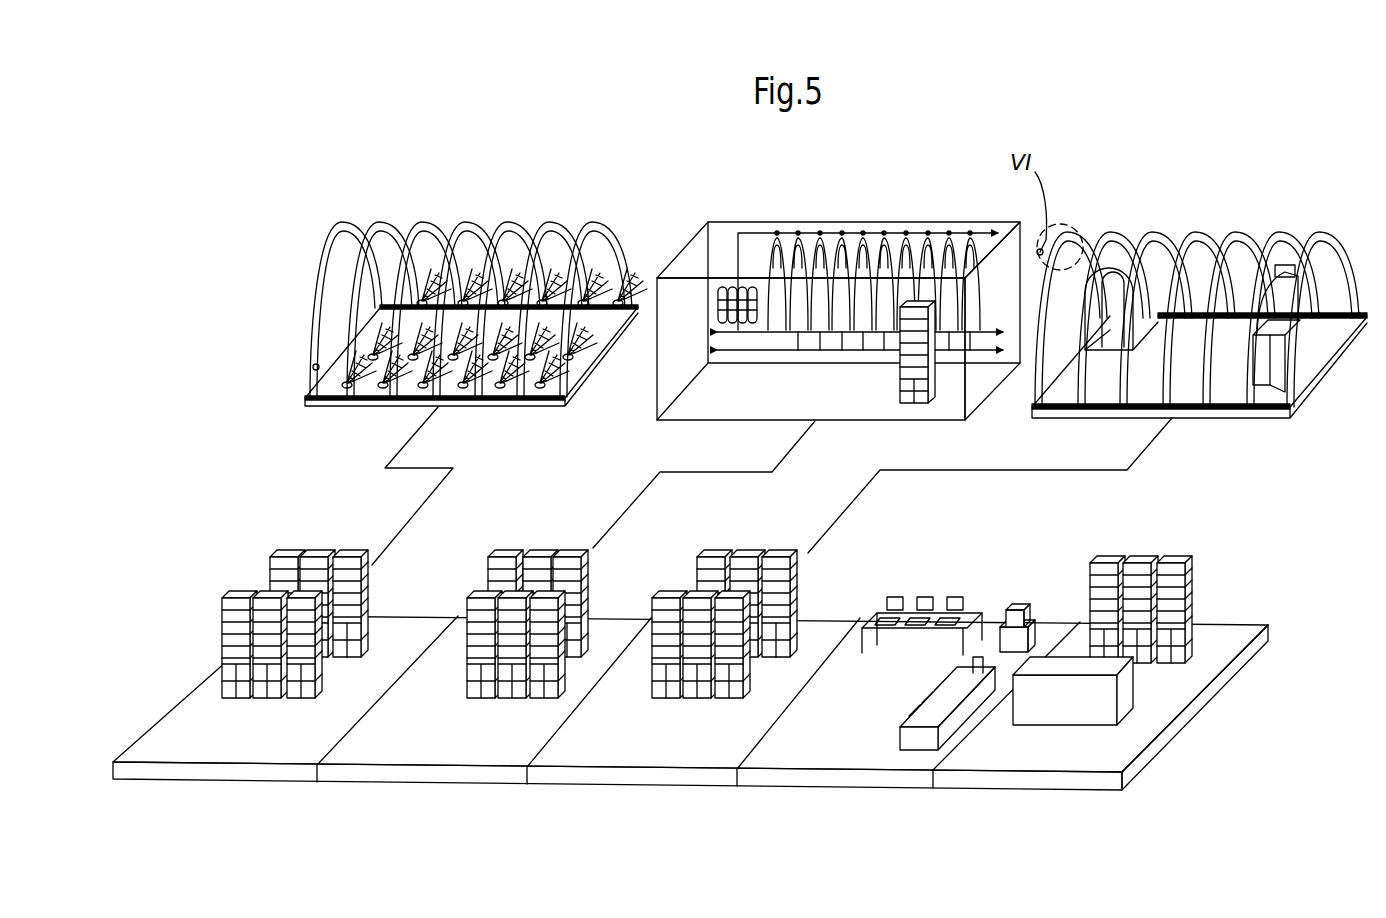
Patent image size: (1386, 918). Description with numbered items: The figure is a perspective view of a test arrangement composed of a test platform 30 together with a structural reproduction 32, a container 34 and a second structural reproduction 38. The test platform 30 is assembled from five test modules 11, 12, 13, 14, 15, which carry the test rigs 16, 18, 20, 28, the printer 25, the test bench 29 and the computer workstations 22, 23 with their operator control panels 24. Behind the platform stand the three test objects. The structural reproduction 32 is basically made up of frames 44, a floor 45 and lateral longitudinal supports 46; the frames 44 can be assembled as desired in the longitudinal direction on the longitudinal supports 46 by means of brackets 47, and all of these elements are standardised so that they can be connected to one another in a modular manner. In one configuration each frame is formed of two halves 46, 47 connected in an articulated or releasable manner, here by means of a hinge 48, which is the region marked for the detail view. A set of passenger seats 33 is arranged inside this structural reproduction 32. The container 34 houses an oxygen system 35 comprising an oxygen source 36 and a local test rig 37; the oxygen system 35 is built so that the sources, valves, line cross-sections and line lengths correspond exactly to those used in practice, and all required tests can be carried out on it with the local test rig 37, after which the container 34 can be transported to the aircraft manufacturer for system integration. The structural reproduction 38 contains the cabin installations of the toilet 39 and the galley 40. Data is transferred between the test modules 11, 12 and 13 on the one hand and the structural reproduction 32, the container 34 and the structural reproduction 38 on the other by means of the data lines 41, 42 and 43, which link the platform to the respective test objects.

The test module 11 is at (185, 781).
The test module 12 is at (373, 786).
The test module 13 is at (583, 788).
The test module 14 is at (800, 789).
The test module 15 is at (1025, 791).
The test rig 16 is at (283, 550).
The test rig 18 is at (512, 550).
The test rig 20 is at (712, 556).
The computer workstation 22 is at (977, 611).
The computer workstation 23 is at (890, 717).
The operator control panel 24 is at (889, 596).
The printer 25 is at (1017, 606).
The test rig 28 is at (1174, 562).
The test bench 29 is at (1078, 710).
The test platform 30 is at (207, 459).
The structural reproduction 32 is at (342, 155).
The passenger seats 33 is at (450, 280).
The container 34 is at (690, 240).
The oxygen system 35 is at (735, 236).
The oxygen source 36 is at (716, 308).
The local test rig 37 is at (920, 407).
The structural reproduction 38 is at (1241, 156).
The toilet 39 is at (1147, 283).
The galley 40 is at (1280, 269).
The data line 41 is at (435, 419).
The data line 42 is at (783, 468).
The data line 43 is at (1145, 470).
The frame 44 is at (320, 247).
The floor 45 is at (583, 388).
The lateral longitudinal support 46 is at (333, 408).
The bracket 47 is at (314, 366).
The hinge 48 is at (1064, 240).